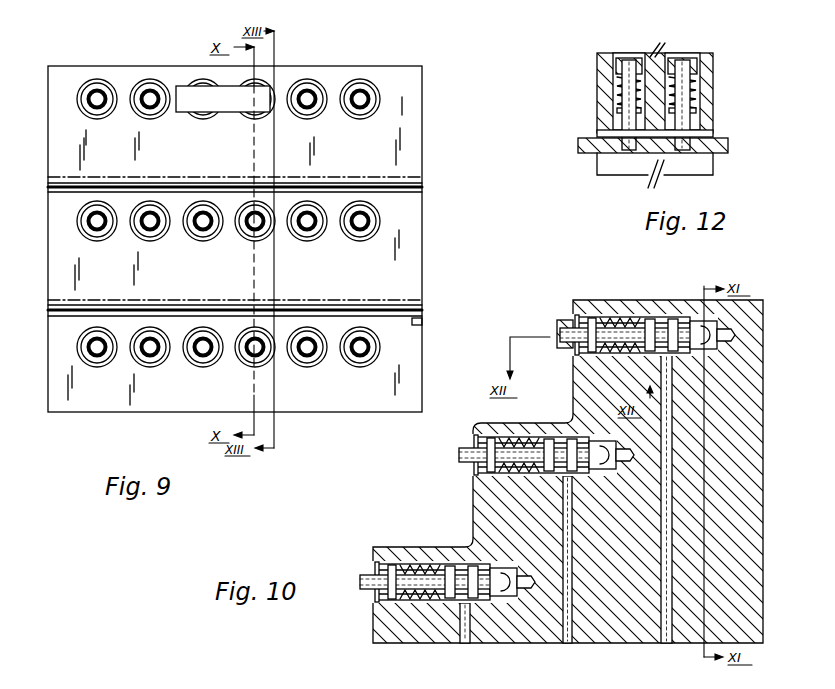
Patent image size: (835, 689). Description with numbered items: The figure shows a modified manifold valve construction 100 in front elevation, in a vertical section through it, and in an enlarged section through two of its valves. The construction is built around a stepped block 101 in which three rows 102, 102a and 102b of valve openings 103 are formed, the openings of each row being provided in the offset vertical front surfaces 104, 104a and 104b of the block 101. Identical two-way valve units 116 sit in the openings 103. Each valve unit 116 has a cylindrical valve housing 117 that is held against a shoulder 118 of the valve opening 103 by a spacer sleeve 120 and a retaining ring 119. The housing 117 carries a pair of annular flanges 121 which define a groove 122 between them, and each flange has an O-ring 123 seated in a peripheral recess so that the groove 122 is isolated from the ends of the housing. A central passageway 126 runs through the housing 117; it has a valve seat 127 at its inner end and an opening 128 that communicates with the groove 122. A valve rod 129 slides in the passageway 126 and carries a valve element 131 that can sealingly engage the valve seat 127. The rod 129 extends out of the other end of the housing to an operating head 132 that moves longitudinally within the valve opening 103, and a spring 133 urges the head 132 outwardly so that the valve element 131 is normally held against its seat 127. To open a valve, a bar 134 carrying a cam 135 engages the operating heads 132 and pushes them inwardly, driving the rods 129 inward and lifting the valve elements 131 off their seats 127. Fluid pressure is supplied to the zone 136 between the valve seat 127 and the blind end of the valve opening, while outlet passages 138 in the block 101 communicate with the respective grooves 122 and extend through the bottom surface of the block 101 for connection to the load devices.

In FIG. 9, the manifold valve construction 100 is at (348, 38).
In FIG. 9, the stepped block 101 is at (393, 66).
In FIG. 10, the stepped block 101 is at (762, 432).
In FIG. 9, the first row of valve openings 102 is at (197, 81).
In FIG. 9, the second row of valve openings 102a is at (72, 230).
In FIG. 9, the third row of valve openings 102b is at (60, 356).
In FIG. 9, the valve opening 103 is at (137, 82).
In FIG. 10, the valve opening 103 is at (597, 318).
In FIG. 9, the first front surface 104 is at (235, 168).
In FIG. 10, the first front surface 104 is at (573, 406).
In FIG. 9, the second front surface 104a is at (235, 292).
In FIG. 10, the second front surface 104a is at (473, 505).
In FIG. 9, the third front surface 104b is at (235, 251).
In FIG. 10, the third front surface 104b is at (373, 626).
In FIG. 10, the valve unit 116 is at (531, 446).
In FIG. 10, the valve housing 117 is at (638, 318).
In FIG. 10, the shoulder 118 is at (712, 320).
In FIG. 10, the retaining ring 119 is at (578, 321).
In FIG. 12, the retaining ring 119 is at (605, 133).
In FIG. 10, the spacer sleeve 120 is at (611, 318).
In FIG. 12, the spacer sleeve 120 is at (612, 82).
In FIG. 10, the annular flange 121 is at (692, 352).
In FIG. 10, the groove 122 is at (669, 364).
In FIG. 10, the O-ring 123 is at (705, 320).
In FIG. 10, the central passageway 126 is at (690, 321).
In FIG. 10, the valve seat 127 is at (715, 354).
In FIG. 10, the opening 128 is at (672, 352).
In FIG. 10, the valve rod 129 is at (657, 329).
In FIG. 12, the valve rod 129 is at (632, 52).
In FIG. 10, the valve element 131 is at (735, 352).
In FIG. 10, the operating head 132 is at (557, 333).
In FIG. 12, the operating head 132 is at (720, 146).
In FIG. 10, the spring 133 is at (600, 352).
In FIG. 12, the spring 133 is at (620, 92).
In FIG. 9, the bar 134 is at (198, 93).
In FIG. 10, the bar 134 is at (566, 350).
In FIG. 12, the bar 134 is at (590, 143).
In FIG. 10, the cam 135 is at (574, 352).
In FIG. 12, the cam 135 is at (628, 138).
In FIG. 10, the zone 136 is at (728, 338).
In FIG. 10, the outlet passage 138 is at (669, 462).